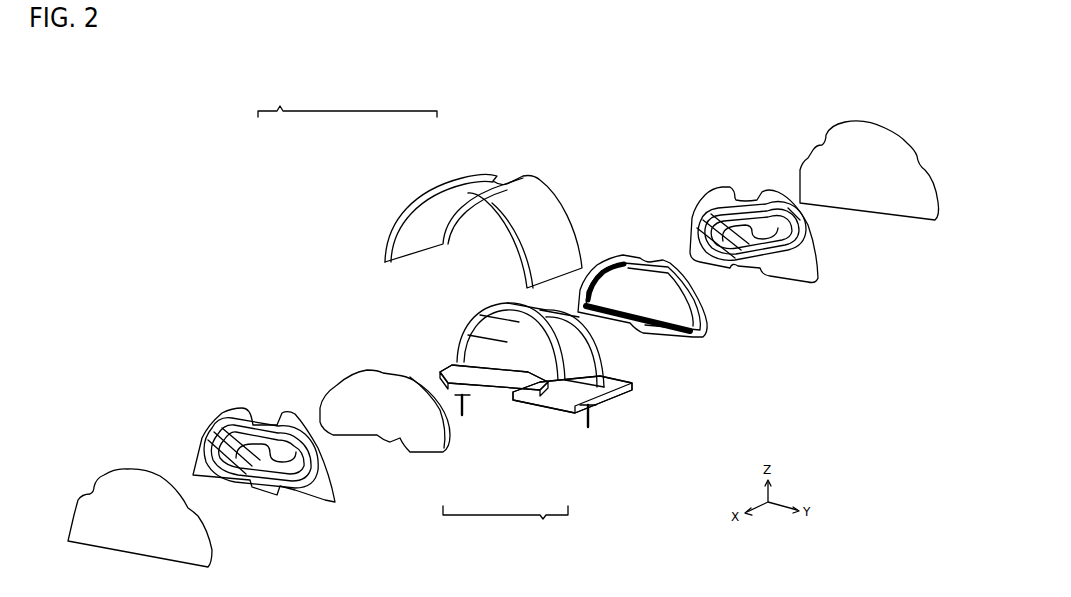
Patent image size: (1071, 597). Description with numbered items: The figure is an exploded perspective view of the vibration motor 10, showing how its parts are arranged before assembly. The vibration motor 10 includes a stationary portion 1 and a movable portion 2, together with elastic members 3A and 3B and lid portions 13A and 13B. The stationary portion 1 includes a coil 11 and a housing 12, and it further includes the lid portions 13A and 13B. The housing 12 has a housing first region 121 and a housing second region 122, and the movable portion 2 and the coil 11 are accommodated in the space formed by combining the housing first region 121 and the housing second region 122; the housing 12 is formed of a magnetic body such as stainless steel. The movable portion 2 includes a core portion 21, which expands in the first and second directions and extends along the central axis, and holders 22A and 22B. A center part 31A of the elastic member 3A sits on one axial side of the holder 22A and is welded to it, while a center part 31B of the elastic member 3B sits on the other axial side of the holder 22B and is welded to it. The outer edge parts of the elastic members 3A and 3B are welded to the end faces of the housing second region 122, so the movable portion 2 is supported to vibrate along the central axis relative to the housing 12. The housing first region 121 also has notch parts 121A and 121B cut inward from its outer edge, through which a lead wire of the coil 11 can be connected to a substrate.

The vibration motor 10 is at (760, 51).
The stationary portion 1 is at (347, 101).
The coil 11 is at (477, 317).
The housing 12 is at (352, 156).
The housing first region 121 is at (447, 373).
The notch part 121A is at (498, 402).
The notch part 121B is at (600, 401).
The housing second region 122 is at (398, 208).
The lid portion 13A is at (132, 490).
The lid portion 13B is at (810, 173).
The movable portion 2 is at (505, 523).
The core portion 21 is at (547, 370).
The holder 22A is at (400, 438).
The holder 22B is at (706, 340).
The elastic member 3A is at (323, 496).
The elastic member 3B is at (803, 279).
The center part 31A is at (237, 408).
The center part 31B is at (697, 202).